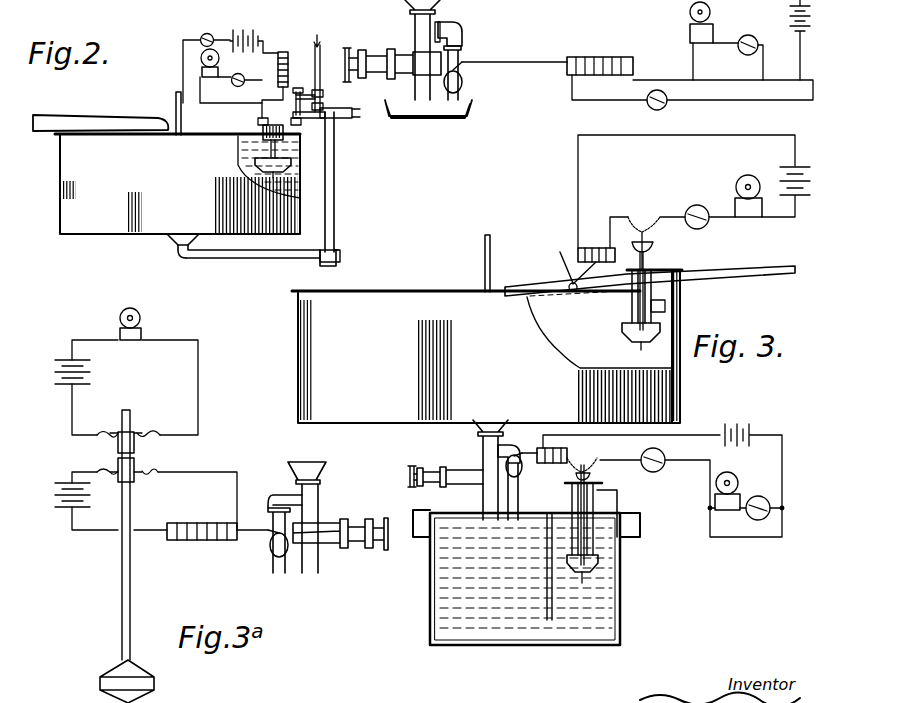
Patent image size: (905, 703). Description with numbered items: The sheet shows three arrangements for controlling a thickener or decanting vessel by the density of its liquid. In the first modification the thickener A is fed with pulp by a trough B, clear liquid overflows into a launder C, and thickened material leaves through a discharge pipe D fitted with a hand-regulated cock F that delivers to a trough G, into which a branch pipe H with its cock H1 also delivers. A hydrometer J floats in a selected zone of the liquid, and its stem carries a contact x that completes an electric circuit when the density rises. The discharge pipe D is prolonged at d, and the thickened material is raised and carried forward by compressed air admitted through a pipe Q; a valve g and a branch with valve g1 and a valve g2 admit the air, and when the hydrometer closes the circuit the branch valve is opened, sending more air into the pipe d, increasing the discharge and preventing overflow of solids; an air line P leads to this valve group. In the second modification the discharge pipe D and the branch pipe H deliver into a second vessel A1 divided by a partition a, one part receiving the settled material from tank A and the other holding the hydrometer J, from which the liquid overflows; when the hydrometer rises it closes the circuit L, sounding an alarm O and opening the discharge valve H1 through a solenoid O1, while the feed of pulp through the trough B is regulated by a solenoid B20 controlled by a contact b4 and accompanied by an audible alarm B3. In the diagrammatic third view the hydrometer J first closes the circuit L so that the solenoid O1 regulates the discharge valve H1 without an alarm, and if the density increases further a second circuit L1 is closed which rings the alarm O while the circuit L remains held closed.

In FIG. 2, the thickener A is at (177, 184).
In FIG. 3, the thickener A is at (486, 329).
In FIG. 3, the second vessel A1 is at (619, 620).
In FIG. 3, the partition a is at (548, 610).
In FIG. 2, the feed trough B is at (48, 120).
In FIG. 3, the feed trough B is at (737, 276).
In FIG. 3, the solenoid B20 is at (585, 246).
In FIG. 3, the audible alarm B3 is at (694, 202).
In FIG. 3, the contact lever b4 is at (568, 281).
In FIG. 2, the overflow launder C is at (283, 150).
In FIG. 2, the discharge pipe D is at (178, 250).
In FIG. 3, the discharge pipe D is at (483, 500).
In FIG. 3A, the discharge pipe D is at (316, 572).
In FIG. 2, the prolongation of discharge pipe d is at (334, 235).
In FIG. 2, the hand-regulated cock F is at (380, 60).
In FIG. 3A, the hand-regulated cock F is at (322, 522).
In FIG. 2, the trough G is at (445, 118).
In FIG. 2, the pipe g is at (359, 104).
In FIG. 2, the pipe g' g1 is at (299, 87).
In FIG. 2, the pipe g2 is at (318, 97).
In FIG. 2, the branch pipe H is at (455, 28).
In FIG. 3, the branch pipe H is at (520, 491).
In FIG. 3A, the branch pipe H is at (280, 574).
In FIG. 2, the cock H1 is at (466, 84).
In FIG. 3, the cock H1 is at (500, 453).
In FIG. 3A, the cock H1 is at (270, 548).
In FIG. 2, the hydrometer J is at (240, 162).
In FIG. 3, the hydrometer J is at (662, 332).
In FIG. 3A, the hydrometer J is at (122, 608).
In FIG. 3, the electric circuit L is at (684, 471).
In FIG. 3A, the electric circuit L is at (192, 478).
In FIG. 3A, the second circuit L1 is at (126, 388).
In FIG. 2, the alarm bell O is at (200, 61).
In FIG. 3, the alarm bell O is at (739, 488).
In FIG. 3A, the alarm bell O is at (141, 318).
In FIG. 2, the electromagnet coil O' O1 is at (283, 52).
In FIG. 3, the electromagnet coil O' O1 is at (567, 455).
In FIG. 3A, the electromagnet coil O' O1 is at (190, 541).
In FIG. 2, the pipe P is at (322, 128).
In FIG. 2, the compressed air pipe Q is at (334, 185).
In FIG. 2, the contact x is at (258, 119).